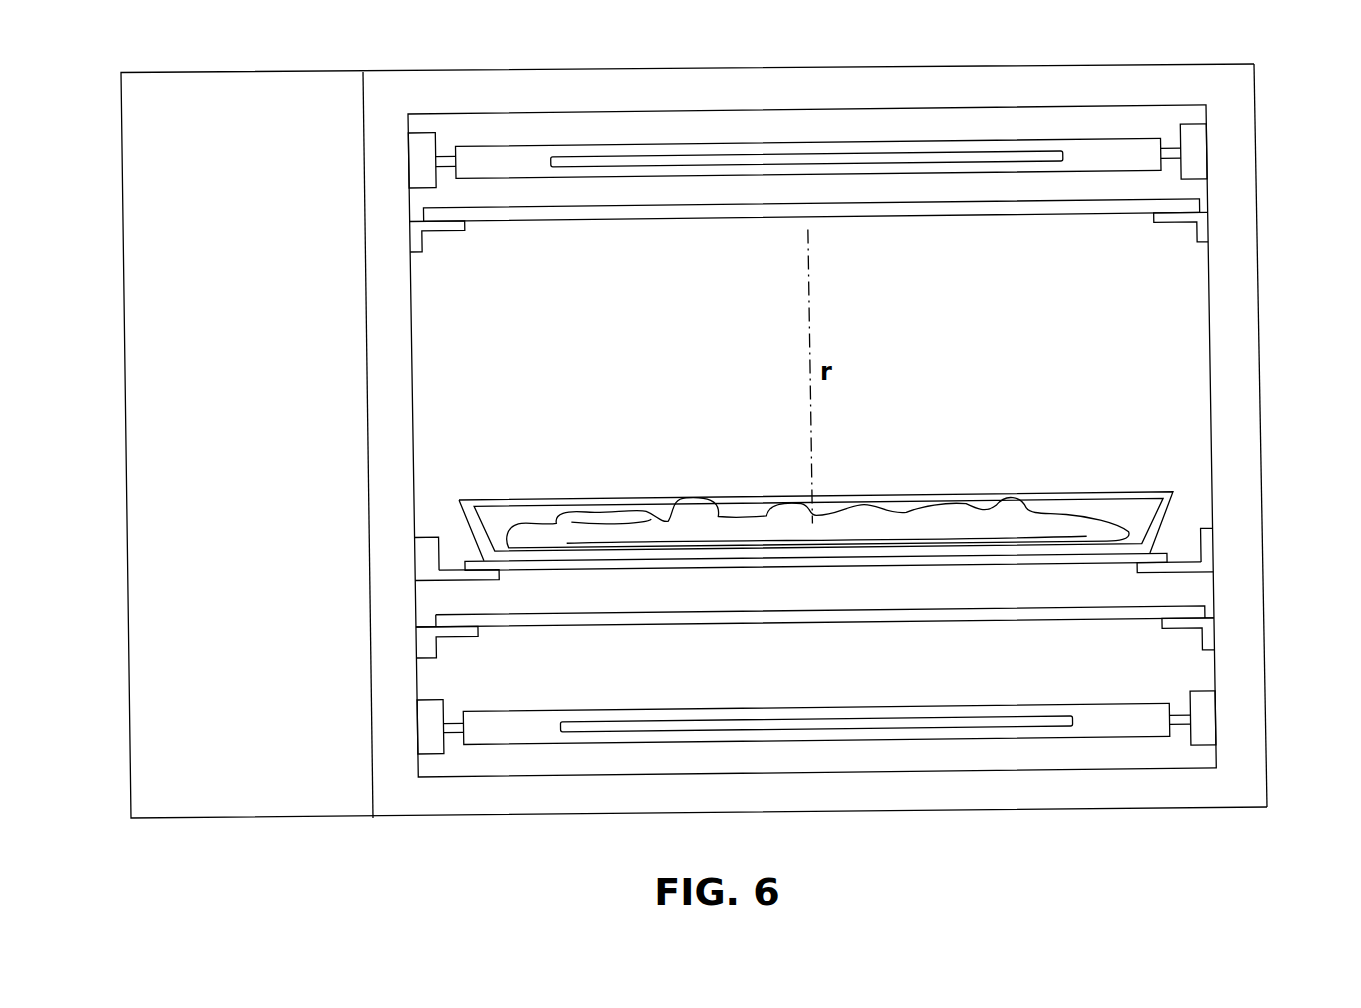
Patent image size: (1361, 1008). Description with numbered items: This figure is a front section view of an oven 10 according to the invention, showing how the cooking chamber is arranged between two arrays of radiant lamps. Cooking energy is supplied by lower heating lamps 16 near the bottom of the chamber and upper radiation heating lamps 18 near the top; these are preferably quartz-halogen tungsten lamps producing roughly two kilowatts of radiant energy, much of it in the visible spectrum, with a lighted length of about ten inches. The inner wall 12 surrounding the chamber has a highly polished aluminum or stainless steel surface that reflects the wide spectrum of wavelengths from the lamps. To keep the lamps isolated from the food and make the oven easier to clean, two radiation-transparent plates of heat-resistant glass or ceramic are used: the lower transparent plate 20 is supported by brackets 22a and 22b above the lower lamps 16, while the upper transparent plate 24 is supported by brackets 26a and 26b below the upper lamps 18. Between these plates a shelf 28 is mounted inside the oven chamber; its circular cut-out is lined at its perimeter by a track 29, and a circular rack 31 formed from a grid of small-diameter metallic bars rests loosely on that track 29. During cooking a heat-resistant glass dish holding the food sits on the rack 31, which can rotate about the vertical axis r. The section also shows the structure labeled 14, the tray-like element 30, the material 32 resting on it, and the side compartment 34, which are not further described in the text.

The oven 10 is at (1257, 107).
The inner wall 12 is at (1210, 325).
The outer cabinet wall 14 is at (1247, 397).
The lower heating lamps 16 is at (816, 704).
The upper radiation heating lamps 18 is at (1022, 140).
The lower transparent plate 20 is at (787, 618).
The bracket 22a is at (428, 652).
The bracket 22b is at (1202, 637).
The upper transparent plate 24 is at (753, 213).
The bracket 26a is at (432, 232).
The bracket 26b is at (1193, 233).
The shelf 28 is at (418, 538).
The track 29 is at (493, 580).
The tray 30 is at (476, 502).
The circular rack 31 is at (660, 572).
The food product 32 is at (737, 524).
The control compartment 34 is at (231, 757).